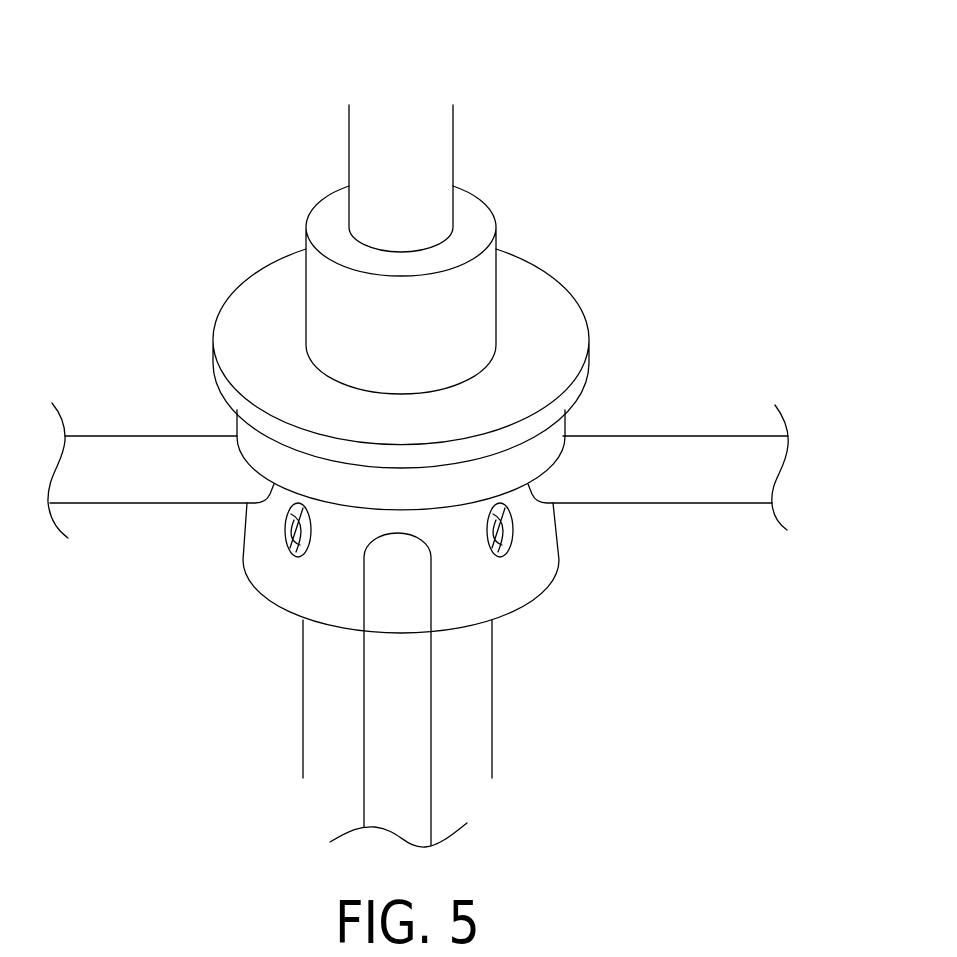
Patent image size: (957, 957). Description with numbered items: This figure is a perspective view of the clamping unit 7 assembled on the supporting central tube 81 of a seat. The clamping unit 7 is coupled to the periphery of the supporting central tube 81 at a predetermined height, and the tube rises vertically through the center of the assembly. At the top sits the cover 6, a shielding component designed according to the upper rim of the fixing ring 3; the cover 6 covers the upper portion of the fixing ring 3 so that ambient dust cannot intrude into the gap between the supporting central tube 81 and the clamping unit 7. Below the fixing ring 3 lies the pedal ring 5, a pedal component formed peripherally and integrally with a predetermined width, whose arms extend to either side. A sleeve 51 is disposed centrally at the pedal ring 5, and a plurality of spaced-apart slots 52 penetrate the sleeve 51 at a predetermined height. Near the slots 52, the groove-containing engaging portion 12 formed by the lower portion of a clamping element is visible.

The fixing ring 3 is at (533, 450).
The pedal ring 5 is at (737, 462).
The cover 6 is at (548, 332).
The clamping unit 7 is at (650, 235).
The groove-containing engaging portion 12 is at (512, 533).
The sleeve 51 is at (518, 578).
The slots 52 is at (492, 523).
The supporting central tube 81 is at (477, 297).